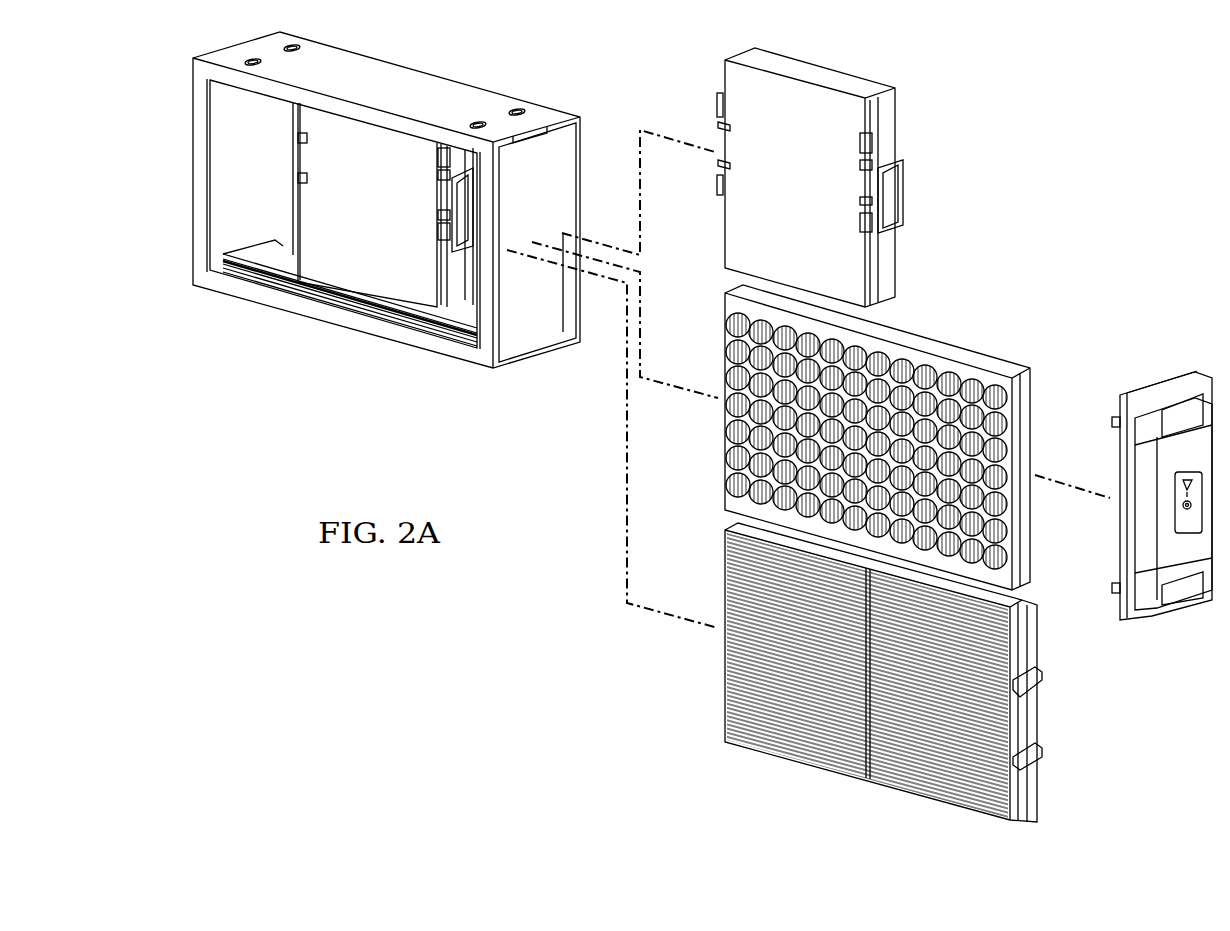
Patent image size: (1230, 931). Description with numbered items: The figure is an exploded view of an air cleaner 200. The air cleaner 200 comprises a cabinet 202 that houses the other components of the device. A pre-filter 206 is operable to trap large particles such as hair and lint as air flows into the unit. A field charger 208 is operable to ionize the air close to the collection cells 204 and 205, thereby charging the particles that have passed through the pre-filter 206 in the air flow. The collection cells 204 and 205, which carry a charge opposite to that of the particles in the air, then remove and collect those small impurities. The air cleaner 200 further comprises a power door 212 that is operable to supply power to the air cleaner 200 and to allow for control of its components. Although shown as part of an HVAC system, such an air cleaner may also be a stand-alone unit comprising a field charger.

The air cleaner 200 is at (1044, 137).
The cabinet 202 is at (500, 87).
The collection cell 204 is at (296, 227).
The collection cell 205 is at (858, 73).
The pre-filter 206 is at (721, 693).
The field charger 208 is at (969, 345).
The power door 212 is at (1159, 381).